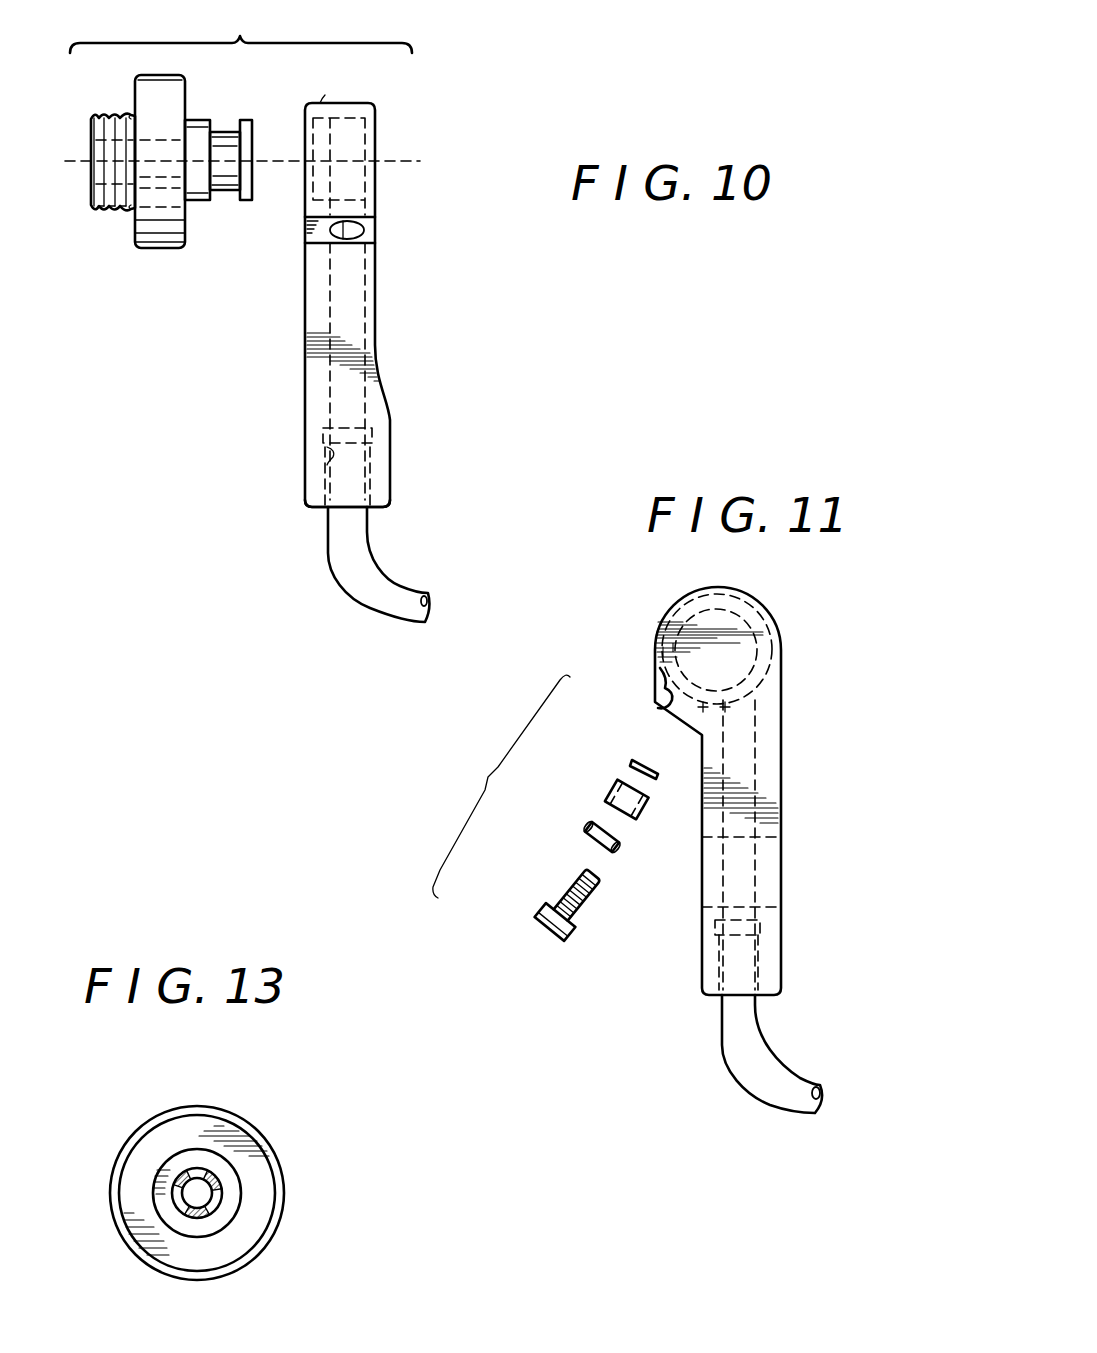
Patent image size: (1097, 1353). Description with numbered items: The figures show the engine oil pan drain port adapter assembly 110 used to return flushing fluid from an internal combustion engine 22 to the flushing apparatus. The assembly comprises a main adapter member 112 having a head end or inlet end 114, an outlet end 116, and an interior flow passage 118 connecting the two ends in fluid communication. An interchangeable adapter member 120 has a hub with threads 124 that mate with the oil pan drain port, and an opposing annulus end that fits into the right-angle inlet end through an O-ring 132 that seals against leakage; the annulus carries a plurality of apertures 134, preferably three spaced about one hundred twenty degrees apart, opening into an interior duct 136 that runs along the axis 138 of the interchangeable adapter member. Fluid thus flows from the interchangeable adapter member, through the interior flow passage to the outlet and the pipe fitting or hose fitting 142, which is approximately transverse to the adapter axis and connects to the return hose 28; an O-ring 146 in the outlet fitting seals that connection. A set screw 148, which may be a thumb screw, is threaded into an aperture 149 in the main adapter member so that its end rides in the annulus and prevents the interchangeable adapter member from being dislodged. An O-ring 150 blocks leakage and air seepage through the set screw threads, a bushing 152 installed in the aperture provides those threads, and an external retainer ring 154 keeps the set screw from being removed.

In FIG. 10, the engine oil pan drain port adapter assembly 110 is at (241, 30).
In FIG. 10, the internal combustion engine 22 is at (93, 130).
In FIG. 10, the threads 124 is at (102, 213).
In FIG. 10, the interchangeable adapter member 120 is at (160, 248).
In FIG. 13, the interchangeable adapter member 120 is at (285, 1177).
In FIG. 10, the main adapter member 112 is at (383, 262).
In FIG. 11, the main adapter member 112 is at (790, 750).
In FIG. 10, the head end or inlet end 114 is at (377, 133).
In FIG. 11, the head end or inlet end 114 is at (773, 620).
In FIG. 10, the O-ring 132 is at (322, 107).
In FIG. 10, the axis 138 is at (297, 162).
In FIG. 10, the interior flow passage 118 is at (355, 333).
In FIG. 11, the interior flow passage 118 is at (740, 857).
In FIG. 10, the O-ring 146 is at (372, 438).
In FIG. 11, the O-ring 146 is at (763, 931).
In FIG. 10, the pipe fitting or hose fitting 142 is at (333, 457).
In FIG. 10, the outlet end 116 is at (377, 512).
In FIG. 10, the return conduit or hose 28 is at (335, 580).
In FIG. 11, the return conduit or hose 28 is at (733, 1073).
In FIG. 11, the aperture 149 is at (655, 684).
In FIG. 11, the external retainer ring 154 is at (633, 762).
In FIG. 11, the bushing 152 is at (613, 787).
In FIG. 11, the O-ring 150 is at (618, 850).
In FIG. 11, the set screw 148 is at (573, 938).
In FIG. 13, the apertures 134 is at (197, 1170).
In FIG. 13, the interior duct 136 is at (200, 1193).